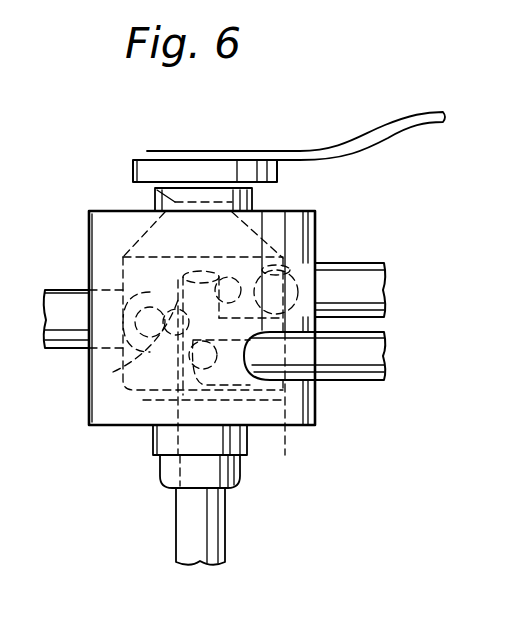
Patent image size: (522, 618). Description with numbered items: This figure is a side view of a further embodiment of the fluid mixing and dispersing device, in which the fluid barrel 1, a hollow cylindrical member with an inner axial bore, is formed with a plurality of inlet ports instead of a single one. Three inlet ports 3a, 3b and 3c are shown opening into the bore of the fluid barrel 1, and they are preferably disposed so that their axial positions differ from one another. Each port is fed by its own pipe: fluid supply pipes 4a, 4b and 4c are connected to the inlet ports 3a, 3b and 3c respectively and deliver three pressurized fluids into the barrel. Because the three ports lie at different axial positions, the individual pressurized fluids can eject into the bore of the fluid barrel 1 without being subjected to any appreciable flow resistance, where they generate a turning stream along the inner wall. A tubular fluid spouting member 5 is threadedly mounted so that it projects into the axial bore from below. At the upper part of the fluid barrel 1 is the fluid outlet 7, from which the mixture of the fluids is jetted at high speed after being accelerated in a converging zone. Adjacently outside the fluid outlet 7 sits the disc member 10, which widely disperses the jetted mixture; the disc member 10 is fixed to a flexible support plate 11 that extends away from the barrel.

The fluid barrel 1 is at (313, 410).
The inlet port 3a is at (323, 246).
The inlet port 3b is at (113, 372).
The inlet port 3c is at (207, 362).
The fluid supply pipe 4a is at (380, 272).
The fluid supply pipe 4b is at (56, 290).
The fluid supply pipe 4c is at (370, 381).
The tubular fluid spouting member 5 is at (212, 535).
The fluid outlet 7 is at (233, 189).
The disc member 10 is at (142, 170).
The flexible support plate 11 is at (333, 153).